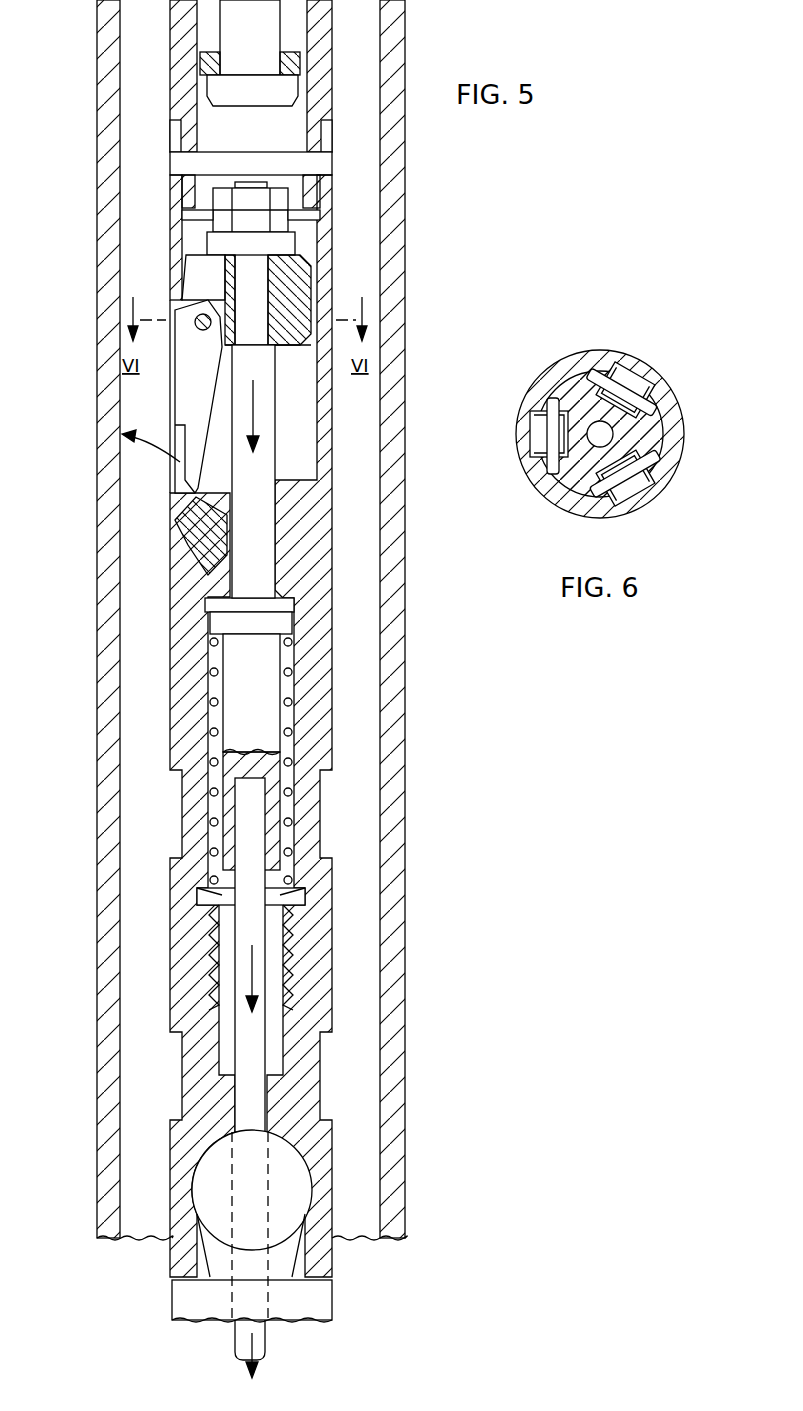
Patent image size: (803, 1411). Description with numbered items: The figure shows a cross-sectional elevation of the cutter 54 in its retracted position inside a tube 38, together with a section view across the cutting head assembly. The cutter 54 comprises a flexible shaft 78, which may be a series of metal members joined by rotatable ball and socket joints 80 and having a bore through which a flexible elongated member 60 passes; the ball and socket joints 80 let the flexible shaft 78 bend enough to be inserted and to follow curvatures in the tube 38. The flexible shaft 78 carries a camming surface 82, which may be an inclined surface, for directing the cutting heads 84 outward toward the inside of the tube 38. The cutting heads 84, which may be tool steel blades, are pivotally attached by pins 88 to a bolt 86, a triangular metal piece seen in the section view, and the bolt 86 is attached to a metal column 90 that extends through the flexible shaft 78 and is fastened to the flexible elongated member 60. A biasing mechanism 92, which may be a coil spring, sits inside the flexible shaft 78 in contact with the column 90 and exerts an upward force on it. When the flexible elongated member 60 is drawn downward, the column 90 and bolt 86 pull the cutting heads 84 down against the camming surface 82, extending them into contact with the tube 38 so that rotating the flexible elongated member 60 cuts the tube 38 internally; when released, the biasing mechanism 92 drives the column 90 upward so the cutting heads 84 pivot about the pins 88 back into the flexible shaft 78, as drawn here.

In FIG. 5, the tube 38 is at (396, 795).
In FIG. 5, the cutter 54 is at (309, 680).
In FIG. 5, the flexible elongated member 60 is at (256, 1044).
In FIG. 5, the flexible shaft 78 is at (323, 660).
In FIG. 5, the ball and socket joints 80 is at (290, 1176).
In FIG. 5, the camming surface 82 is at (186, 524).
In FIG. 5, the cutting heads 84 is at (172, 396).
In FIG. 6, the cutting heads 84 is at (520, 426).
In FIG. 5, the bolt 86 is at (298, 292).
In FIG. 5, the pins 88 is at (203, 331).
In FIG. 6, the pins 88 is at (553, 405).
In FIG. 5, the column 90 is at (262, 556).
In FIG. 6, the column 90 is at (606, 436).
In FIG. 5, the biasing mechanism 92 is at (210, 650).